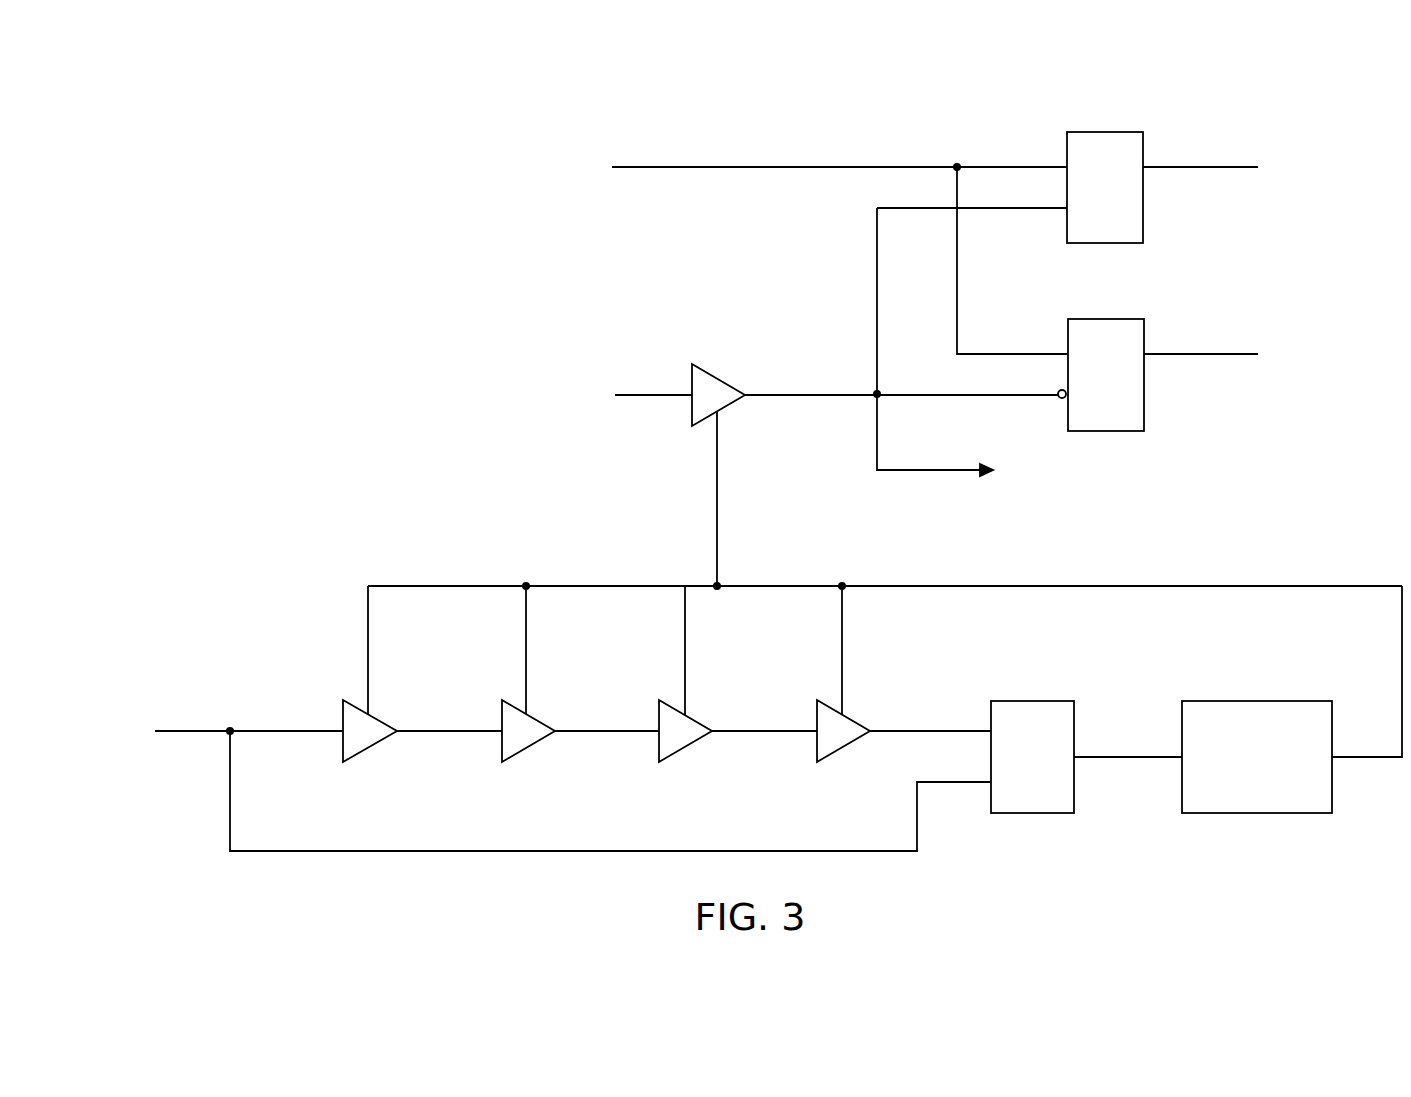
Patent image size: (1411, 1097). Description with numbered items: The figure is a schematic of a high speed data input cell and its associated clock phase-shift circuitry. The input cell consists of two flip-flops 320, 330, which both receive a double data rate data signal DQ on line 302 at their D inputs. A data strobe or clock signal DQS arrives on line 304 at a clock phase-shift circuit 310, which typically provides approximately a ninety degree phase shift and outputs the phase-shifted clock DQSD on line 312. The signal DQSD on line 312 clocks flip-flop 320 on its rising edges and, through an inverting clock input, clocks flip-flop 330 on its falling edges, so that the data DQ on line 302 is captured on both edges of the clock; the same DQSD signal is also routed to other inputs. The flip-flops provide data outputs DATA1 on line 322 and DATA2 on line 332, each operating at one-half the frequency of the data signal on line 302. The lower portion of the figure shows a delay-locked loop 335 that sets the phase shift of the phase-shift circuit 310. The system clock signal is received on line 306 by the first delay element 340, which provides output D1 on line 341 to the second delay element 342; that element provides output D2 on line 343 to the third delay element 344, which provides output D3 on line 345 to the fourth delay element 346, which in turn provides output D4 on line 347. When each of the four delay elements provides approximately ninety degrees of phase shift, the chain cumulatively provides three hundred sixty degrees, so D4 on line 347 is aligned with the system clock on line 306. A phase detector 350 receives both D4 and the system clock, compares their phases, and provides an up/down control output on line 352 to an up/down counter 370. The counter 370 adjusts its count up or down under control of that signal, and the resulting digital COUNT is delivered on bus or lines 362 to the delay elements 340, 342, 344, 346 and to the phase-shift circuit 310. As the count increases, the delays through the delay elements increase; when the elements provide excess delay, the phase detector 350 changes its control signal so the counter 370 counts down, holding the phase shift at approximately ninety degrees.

The line 302 is at (718, 167).
The line 304 is at (642, 398).
The line 306 is at (207, 731).
The clock phase-shift circuit 310 is at (718, 378).
The line 312 is at (803, 398).
The flip-flop 320 is at (1108, 132).
The line 322 is at (1197, 167).
The flip-flop 330 is at (1107, 319).
The line 332 is at (1190, 354).
The delay-locked loop 335 is at (312, 580).
The first delay element 340 is at (382, 718).
The line 341 is at (422, 734).
The second delay element 342 is at (539, 716).
The line 343 is at (577, 734).
The third delay element 344 is at (697, 716).
The line 345 is at (732, 734).
The fourth delay element 346 is at (854, 715).
The line 347 is at (887, 734).
The phase detector 350 is at (1032, 701).
The line 352 is at (1110, 760).
The lines 362 is at (1378, 760).
The up/down counter 370 is at (1253, 701).